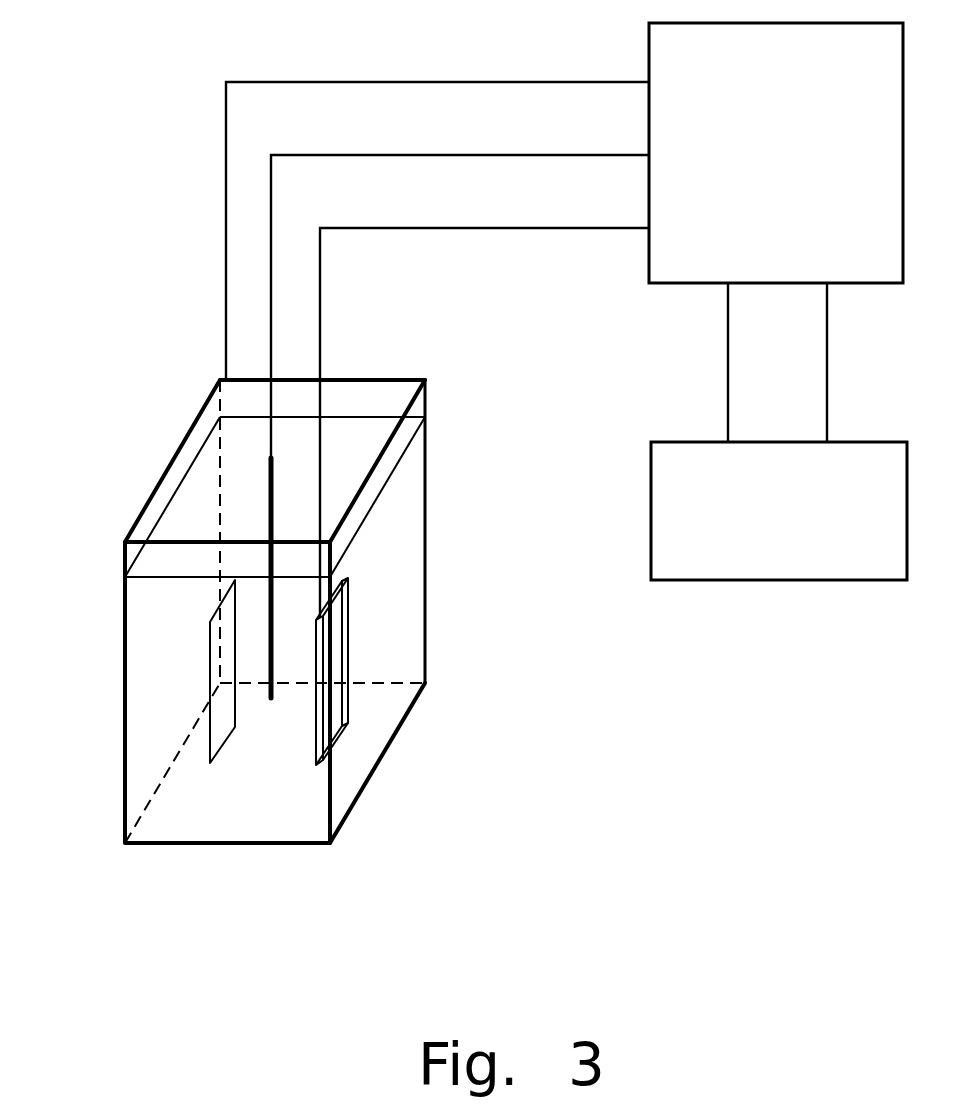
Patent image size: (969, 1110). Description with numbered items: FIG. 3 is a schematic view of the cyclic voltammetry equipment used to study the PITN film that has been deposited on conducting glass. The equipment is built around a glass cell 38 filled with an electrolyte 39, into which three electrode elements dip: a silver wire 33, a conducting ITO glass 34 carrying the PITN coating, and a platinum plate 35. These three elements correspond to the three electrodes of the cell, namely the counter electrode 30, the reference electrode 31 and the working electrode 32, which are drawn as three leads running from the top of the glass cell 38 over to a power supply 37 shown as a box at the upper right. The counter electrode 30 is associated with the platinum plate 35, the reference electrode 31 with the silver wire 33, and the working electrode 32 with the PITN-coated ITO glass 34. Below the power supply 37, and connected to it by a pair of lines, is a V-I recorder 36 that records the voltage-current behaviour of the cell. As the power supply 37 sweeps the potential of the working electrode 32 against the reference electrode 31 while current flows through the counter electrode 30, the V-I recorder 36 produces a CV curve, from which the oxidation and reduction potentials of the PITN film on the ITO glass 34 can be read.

The counter electrode 30 is at (437, 209).
The reference electrode 31 is at (460, 284).
The working electrode 32 is at (484, 402).
The silver wire 33 is at (276, 492).
The conducting ITO glass 34 is at (334, 666).
The platinum plate 35 is at (227, 693).
The V-I recorder 36 is at (779, 511).
The power supply 37 is at (776, 232).
The glass cell 38 is at (193, 843).
The electrolyte 39 is at (160, 678).